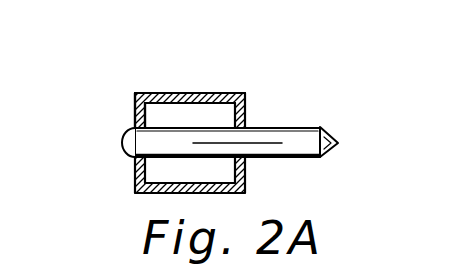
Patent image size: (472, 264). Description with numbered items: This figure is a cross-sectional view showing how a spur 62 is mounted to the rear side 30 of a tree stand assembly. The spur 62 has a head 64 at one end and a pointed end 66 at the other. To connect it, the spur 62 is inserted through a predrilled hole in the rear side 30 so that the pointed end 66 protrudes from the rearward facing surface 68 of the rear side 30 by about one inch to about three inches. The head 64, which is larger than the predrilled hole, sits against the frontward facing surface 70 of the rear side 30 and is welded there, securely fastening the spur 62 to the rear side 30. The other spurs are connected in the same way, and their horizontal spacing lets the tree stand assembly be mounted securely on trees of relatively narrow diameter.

The rear side 30 is at (178, 92).
The spur 62 is at (264, 133).
The head 64 is at (122, 142).
The pointed end 66 is at (336, 141).
The rearward facing surface 68 is at (246, 92).
The frontward facing surface 70 is at (134, 102).